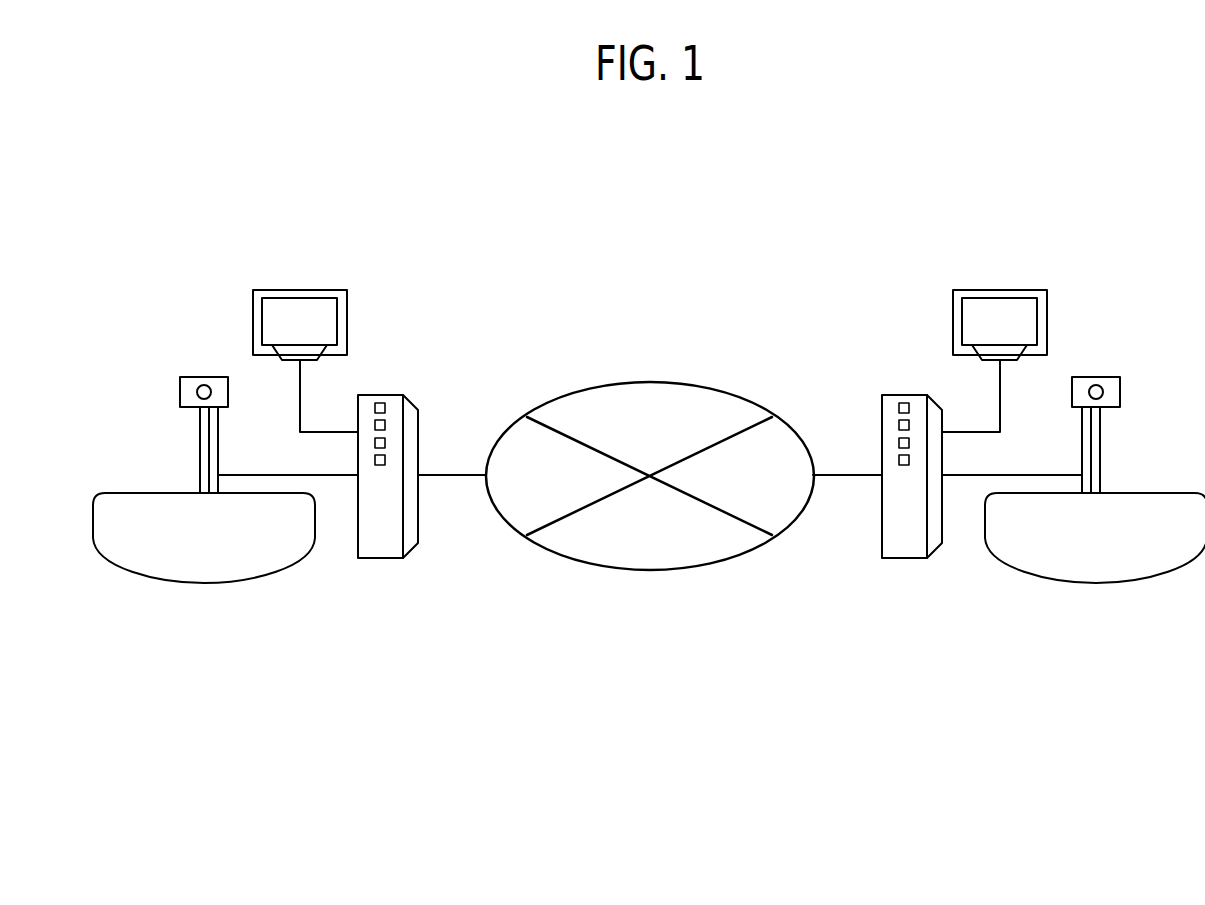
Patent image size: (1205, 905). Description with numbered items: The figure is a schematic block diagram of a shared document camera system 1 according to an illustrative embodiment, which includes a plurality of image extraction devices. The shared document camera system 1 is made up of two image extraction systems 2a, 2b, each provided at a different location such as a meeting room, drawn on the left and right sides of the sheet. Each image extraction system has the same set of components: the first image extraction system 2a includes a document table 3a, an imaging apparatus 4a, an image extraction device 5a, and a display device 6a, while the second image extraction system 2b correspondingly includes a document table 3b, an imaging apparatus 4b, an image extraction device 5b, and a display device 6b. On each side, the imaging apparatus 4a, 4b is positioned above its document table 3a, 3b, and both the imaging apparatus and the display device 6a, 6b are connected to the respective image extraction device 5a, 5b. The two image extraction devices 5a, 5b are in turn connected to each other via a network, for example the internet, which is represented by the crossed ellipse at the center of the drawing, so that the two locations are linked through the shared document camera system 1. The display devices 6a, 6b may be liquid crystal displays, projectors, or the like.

The shared document camera system 1 is at (660, 195).
The image extraction system 2a is at (172, 267).
The image extraction system 2b is at (1118, 267).
The document table 3a is at (140, 493).
The document table 3b is at (1164, 493).
The imaging apparatus 4a is at (203, 377).
The imaging apparatus 4b is at (1095, 377).
The image extraction device 5a is at (388, 395).
The image extraction device 5b is at (905, 395).
The display device 6a is at (283, 290).
The display device 6b is at (1020, 290).